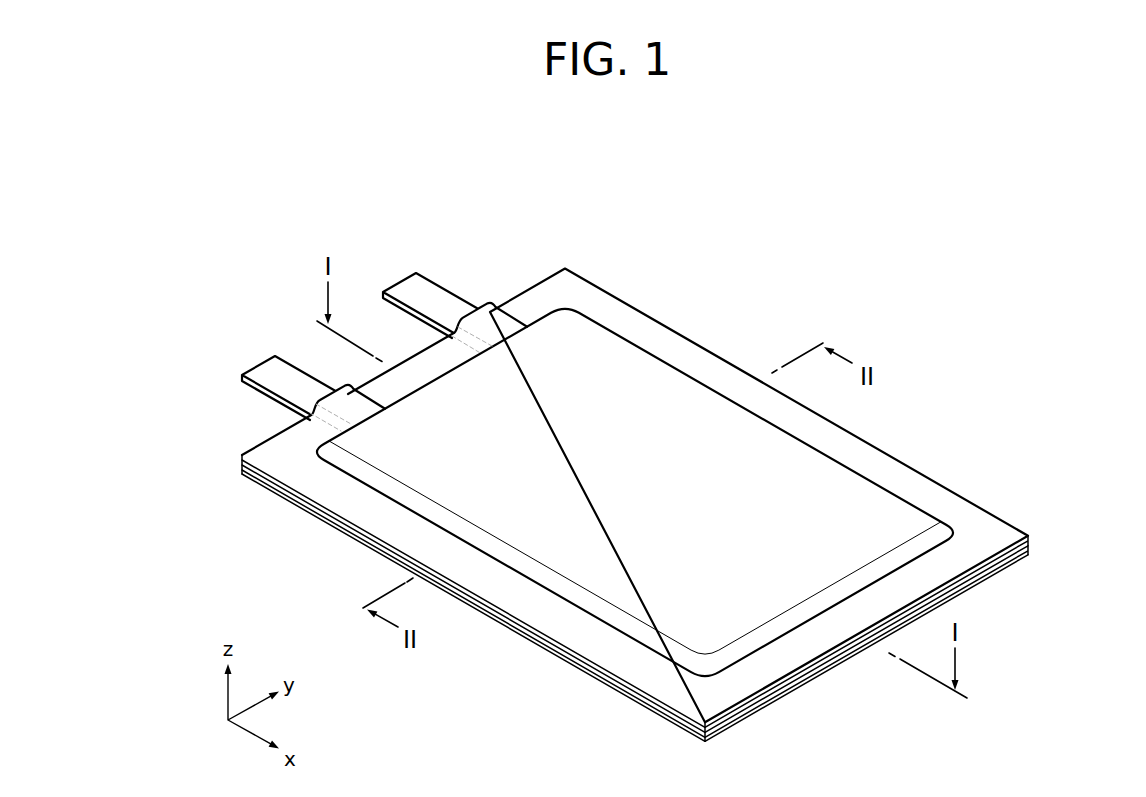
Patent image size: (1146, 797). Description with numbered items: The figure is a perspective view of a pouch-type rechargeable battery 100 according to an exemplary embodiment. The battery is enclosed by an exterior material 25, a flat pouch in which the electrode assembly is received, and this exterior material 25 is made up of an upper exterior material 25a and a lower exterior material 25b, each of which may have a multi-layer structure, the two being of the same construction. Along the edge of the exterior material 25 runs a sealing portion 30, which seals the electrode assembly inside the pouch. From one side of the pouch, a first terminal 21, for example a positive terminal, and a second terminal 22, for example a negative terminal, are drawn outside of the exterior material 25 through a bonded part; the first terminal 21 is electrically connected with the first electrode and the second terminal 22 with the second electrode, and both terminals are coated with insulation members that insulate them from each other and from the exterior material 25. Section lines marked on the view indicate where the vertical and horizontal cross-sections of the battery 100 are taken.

The pouch-type rechargeable battery 100 is at (699, 238).
The first terminal 21 is at (432, 294).
The second terminal 22 is at (266, 372).
The exterior material 25 is at (694, 505).
The upper exterior material 25a is at (1032, 537).
The lower exterior material 25b is at (1032, 549).
The sealing portion 30 is at (800, 677).